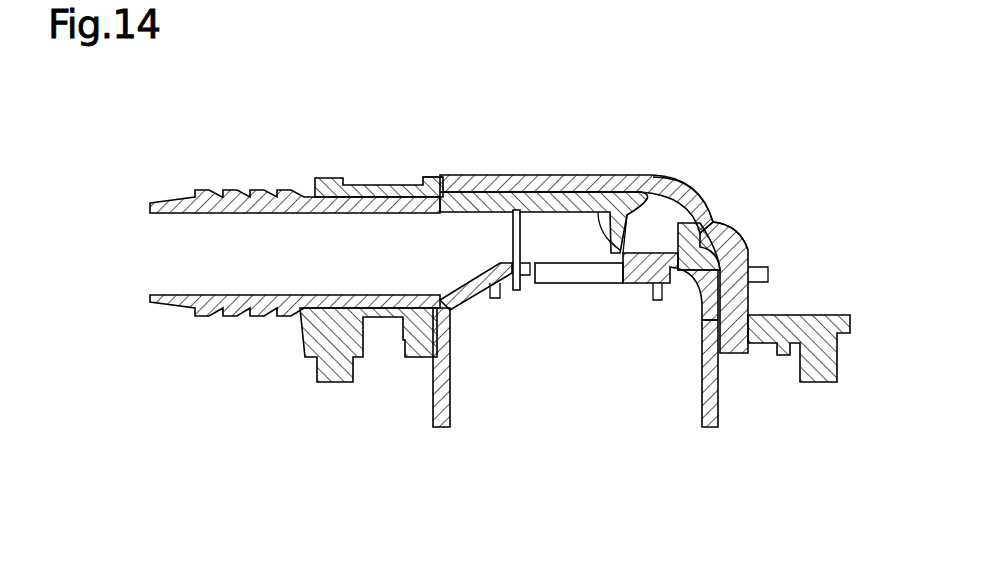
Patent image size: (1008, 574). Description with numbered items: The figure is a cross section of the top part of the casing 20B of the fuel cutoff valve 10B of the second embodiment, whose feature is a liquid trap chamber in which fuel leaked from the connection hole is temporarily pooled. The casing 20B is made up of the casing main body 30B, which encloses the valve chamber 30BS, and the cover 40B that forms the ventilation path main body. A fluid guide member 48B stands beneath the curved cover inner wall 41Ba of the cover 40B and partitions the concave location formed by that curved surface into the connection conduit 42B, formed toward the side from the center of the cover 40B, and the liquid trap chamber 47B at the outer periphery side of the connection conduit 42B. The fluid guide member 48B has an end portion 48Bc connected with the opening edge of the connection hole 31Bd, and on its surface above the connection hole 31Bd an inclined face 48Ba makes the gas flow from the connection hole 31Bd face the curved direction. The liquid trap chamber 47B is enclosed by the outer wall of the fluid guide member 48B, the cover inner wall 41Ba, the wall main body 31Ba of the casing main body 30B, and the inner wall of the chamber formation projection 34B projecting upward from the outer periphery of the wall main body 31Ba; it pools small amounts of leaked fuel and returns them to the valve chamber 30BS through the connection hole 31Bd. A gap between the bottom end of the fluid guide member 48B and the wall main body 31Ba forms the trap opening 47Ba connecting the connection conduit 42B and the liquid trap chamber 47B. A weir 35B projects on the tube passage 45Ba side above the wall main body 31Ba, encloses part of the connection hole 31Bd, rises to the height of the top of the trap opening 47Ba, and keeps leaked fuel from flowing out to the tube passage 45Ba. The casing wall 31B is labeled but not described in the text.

The fuel cutoff valve 10B is at (796, 91).
The tube passage 45Ba is at (292, 252).
The cover 40B is at (283, 325).
The casing main body 30B is at (433, 413).
The casing 20B is at (195, 387).
The weir 35B is at (440, 183).
The connection conduit 42B is at (513, 250).
The fluid guide member 48B is at (613, 192).
The inclined face 48Ba is at (558, 192).
The end portion 48Bc is at (640, 207).
The cover inner wall 41Ba is at (688, 190).
The chamber formation projection 34B is at (703, 192).
The liquid trap chamber 47B is at (715, 223).
The wall main body 31Ba is at (725, 239).
The trap opening 47Ba is at (768, 277).
The flange plate 31B is at (518, 272).
The connection hole 31Bd is at (577, 280).
The valve chamber 30BS is at (575, 362).